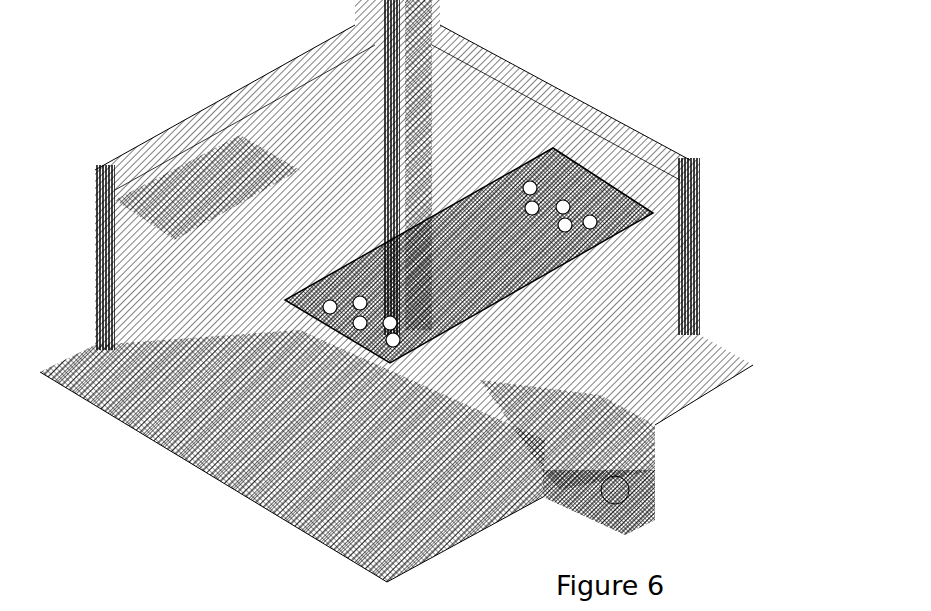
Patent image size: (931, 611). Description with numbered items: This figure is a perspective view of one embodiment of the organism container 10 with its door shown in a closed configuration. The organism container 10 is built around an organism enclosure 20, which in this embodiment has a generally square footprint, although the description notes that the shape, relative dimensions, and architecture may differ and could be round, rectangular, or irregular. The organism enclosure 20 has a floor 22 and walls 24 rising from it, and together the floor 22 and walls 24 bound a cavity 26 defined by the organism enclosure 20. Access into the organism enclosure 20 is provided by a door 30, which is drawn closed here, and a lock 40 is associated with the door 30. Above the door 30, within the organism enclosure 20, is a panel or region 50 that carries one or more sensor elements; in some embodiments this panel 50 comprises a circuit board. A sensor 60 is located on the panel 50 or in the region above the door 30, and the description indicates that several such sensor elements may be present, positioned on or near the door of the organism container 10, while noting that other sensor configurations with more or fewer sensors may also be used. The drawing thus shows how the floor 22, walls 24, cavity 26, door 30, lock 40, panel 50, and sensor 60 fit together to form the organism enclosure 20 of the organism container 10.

The organism container 10 is at (795, 173).
The organism enclosure 20 is at (755, 125).
The floor of organism enclosure 22 is at (285, 503).
The walls of organism enclosure 24 is at (285, 85).
The cavity defined by organism enclosure 26 is at (255, 188).
The door into organism enclosure 30 is at (510, 378).
The lock associated with door 40 is at (650, 480).
The panel or region above door 50 is at (583, 255).
The sensor 60 is at (598, 226).